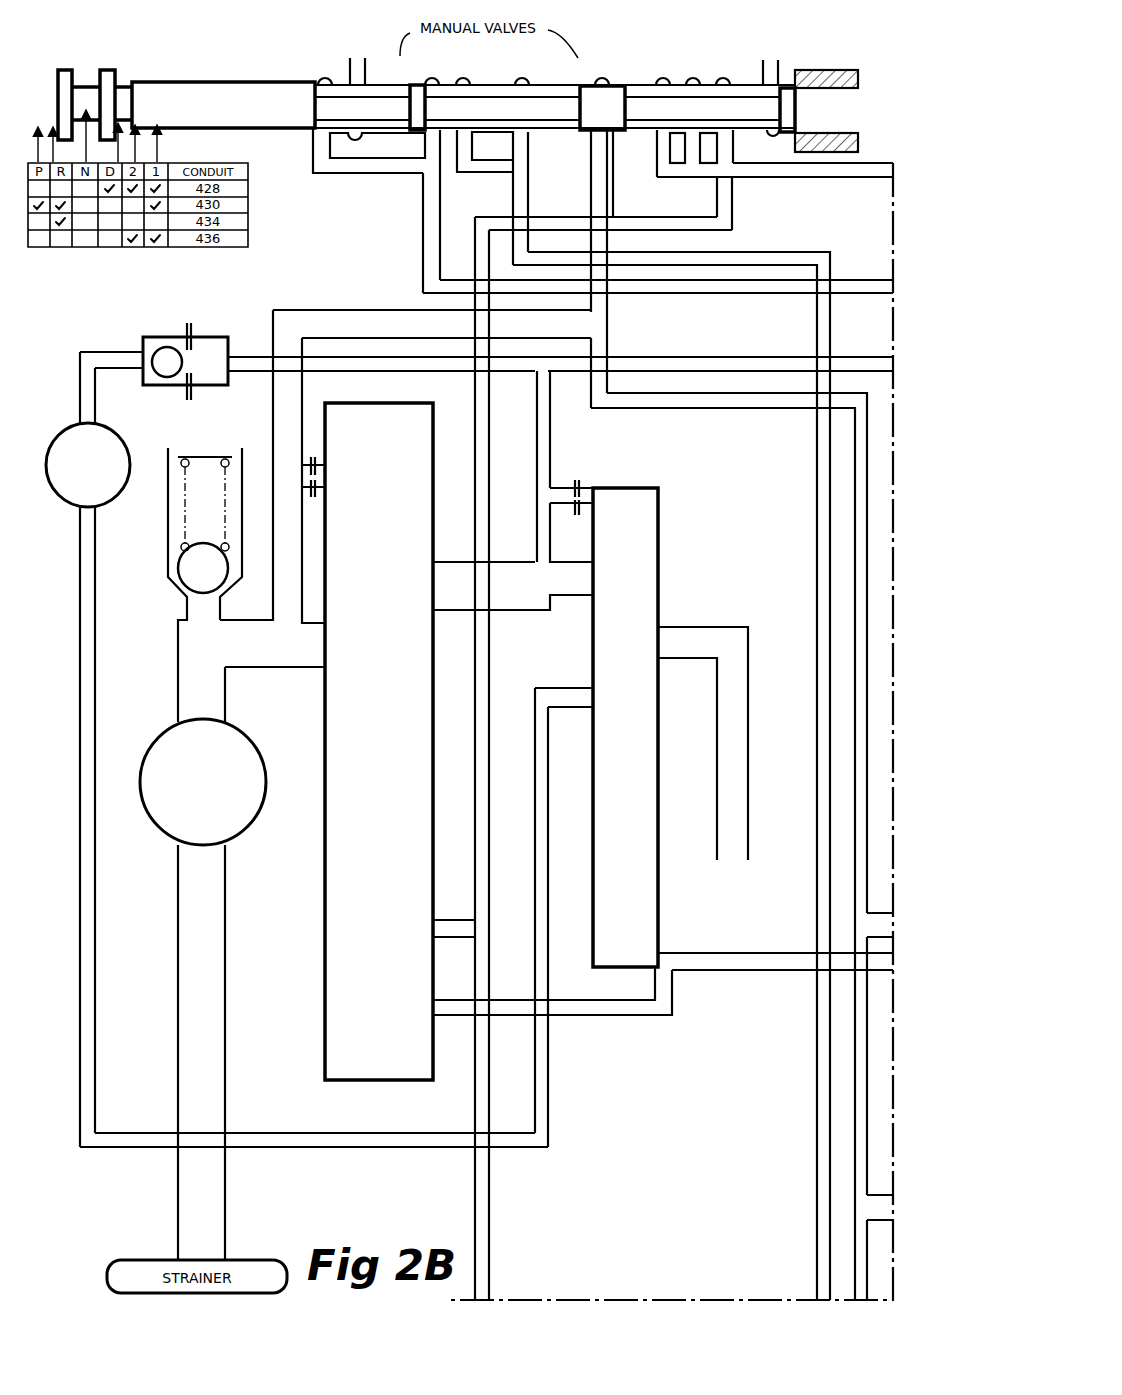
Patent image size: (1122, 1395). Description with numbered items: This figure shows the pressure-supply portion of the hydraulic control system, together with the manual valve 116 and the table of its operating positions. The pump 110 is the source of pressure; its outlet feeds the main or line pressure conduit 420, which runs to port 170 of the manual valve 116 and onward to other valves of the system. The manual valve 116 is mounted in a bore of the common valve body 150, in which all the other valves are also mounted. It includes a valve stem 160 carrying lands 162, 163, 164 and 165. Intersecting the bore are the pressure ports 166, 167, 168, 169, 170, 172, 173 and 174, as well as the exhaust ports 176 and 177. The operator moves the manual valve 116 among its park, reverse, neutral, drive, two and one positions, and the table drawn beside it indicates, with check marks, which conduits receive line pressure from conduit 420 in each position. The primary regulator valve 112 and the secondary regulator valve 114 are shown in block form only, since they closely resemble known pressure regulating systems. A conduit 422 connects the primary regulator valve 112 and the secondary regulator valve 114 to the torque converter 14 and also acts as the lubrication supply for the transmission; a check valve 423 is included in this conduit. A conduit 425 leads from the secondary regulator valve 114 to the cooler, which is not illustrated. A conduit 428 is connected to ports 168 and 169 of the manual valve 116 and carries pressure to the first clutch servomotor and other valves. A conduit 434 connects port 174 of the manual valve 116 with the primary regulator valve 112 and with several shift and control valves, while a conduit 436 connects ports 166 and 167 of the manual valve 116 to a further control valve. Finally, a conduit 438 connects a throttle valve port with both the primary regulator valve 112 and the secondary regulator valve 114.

The torque converter 14 is at (80, 490).
The pump 110 is at (193, 807).
The primary regulator valve 112 is at (352, 705).
The secondary regulator valve 114 is at (613, 738).
The manual valve 116 is at (744, 186).
The valve body 150 is at (835, 162).
The valve stem 160 is at (193, 76).
The land 162 is at (208, 111).
The land 163 is at (418, 86).
The land 164 is at (602, 88).
The land 165 is at (797, 90).
The pressure port 166 is at (320, 128).
The pressure port 167 is at (425, 136).
The pressure port 168 is at (470, 135).
The pressure port 169 is at (538, 135).
The pressure port 170 is at (602, 139).
The pressure port 172 is at (670, 142).
The pressure port 173 is at (693, 140).
The pressure port 174 is at (740, 135).
The exhaust port 176 is at (350, 78).
The exhaust port 177 is at (763, 82).
The main line pressure conduit 420 is at (610, 312).
The conduit 422 is at (642, 361).
The check valve 423 is at (171, 328).
The conduit 425 is at (748, 742).
The conduit 428 is at (816, 248).
The conduit 434 is at (660, 211).
The conduit 436 is at (423, 214).
The conduit 438 is at (756, 950).